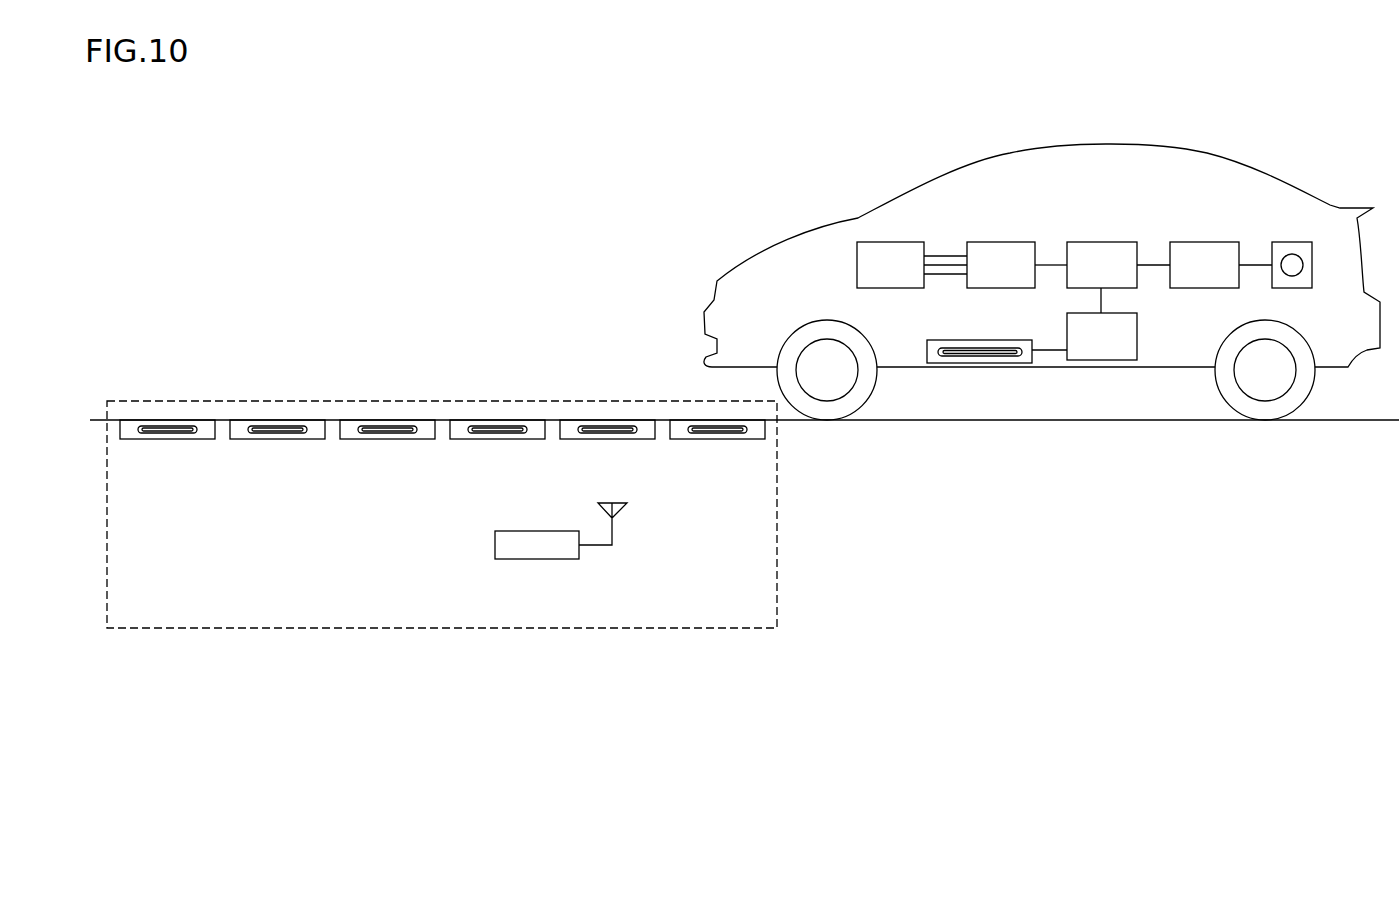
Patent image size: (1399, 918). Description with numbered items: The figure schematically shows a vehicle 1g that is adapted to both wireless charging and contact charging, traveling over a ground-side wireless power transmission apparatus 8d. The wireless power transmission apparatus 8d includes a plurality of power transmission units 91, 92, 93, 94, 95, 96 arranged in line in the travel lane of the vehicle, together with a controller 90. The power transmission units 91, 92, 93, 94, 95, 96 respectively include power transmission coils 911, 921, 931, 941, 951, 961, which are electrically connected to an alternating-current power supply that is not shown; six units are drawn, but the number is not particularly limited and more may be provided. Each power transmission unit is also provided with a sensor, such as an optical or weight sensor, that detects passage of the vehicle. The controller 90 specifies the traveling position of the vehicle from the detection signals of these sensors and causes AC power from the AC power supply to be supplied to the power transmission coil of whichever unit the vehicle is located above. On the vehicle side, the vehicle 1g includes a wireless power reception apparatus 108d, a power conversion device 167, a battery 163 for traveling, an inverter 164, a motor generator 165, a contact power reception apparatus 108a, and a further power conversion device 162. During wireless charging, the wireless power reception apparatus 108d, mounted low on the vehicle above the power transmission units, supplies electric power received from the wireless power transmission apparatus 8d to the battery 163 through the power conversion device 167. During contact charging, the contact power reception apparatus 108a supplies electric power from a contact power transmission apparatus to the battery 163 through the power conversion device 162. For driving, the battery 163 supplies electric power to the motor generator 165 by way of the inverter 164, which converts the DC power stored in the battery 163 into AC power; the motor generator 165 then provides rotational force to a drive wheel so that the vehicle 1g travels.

The vehicle 1g is at (1267, 170).
The motor generator 165 is at (905, 242).
The inverter 164 is at (998, 242).
The battery 163 is at (1099, 242).
The power conversion device 162 is at (1202, 242).
The contact power reception apparatus 108a is at (1290, 242).
The power conversion device 167 is at (1102, 360).
The wireless power reception apparatus 108d is at (980, 367).
The wireless power transmission apparatus 8d is at (583, 401).
The power transmission unit 96 is at (167, 452).
The power transmission coil 961 is at (170, 437).
The power transmission unit 95 is at (277, 452).
The power transmission coil 951 is at (280, 437).
The power transmission unit 94 is at (387, 452).
The power transmission coil 941 is at (390, 437).
The power transmission unit 93 is at (497, 452).
The power transmission coil 931 is at (500, 437).
The power transmission unit 92 is at (607, 452).
The power transmission coil 921 is at (610, 437).
The power transmission unit 91 is at (717, 452).
The power transmission coil 911 is at (720, 437).
The controller 90 is at (553, 561).